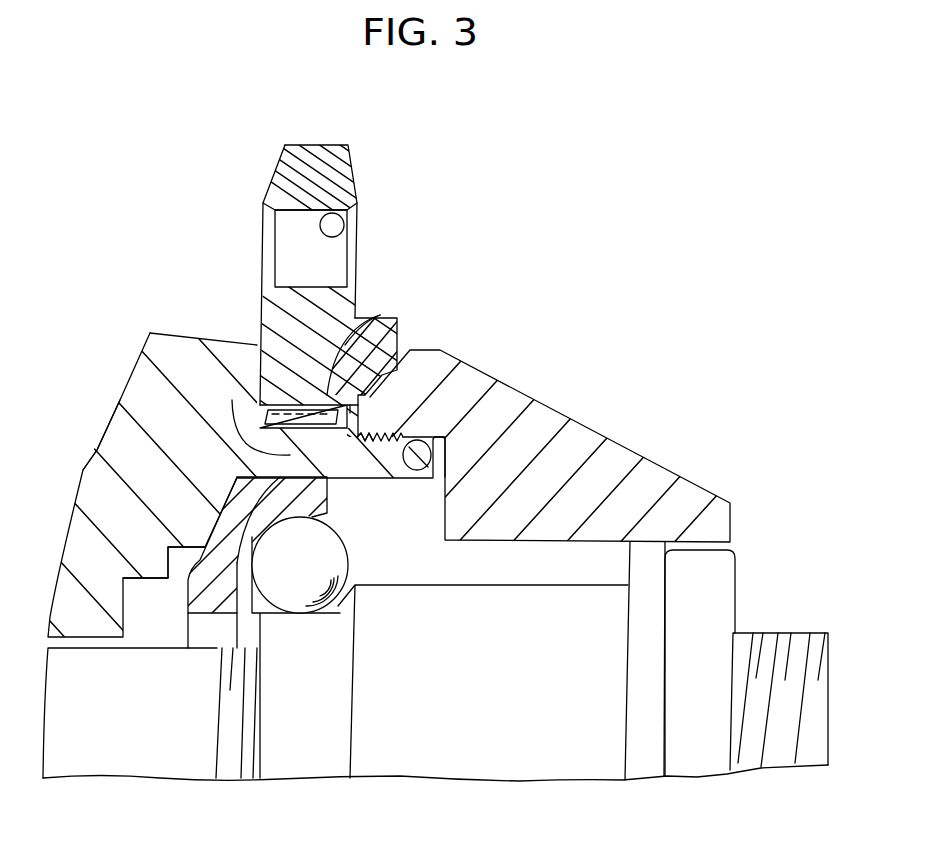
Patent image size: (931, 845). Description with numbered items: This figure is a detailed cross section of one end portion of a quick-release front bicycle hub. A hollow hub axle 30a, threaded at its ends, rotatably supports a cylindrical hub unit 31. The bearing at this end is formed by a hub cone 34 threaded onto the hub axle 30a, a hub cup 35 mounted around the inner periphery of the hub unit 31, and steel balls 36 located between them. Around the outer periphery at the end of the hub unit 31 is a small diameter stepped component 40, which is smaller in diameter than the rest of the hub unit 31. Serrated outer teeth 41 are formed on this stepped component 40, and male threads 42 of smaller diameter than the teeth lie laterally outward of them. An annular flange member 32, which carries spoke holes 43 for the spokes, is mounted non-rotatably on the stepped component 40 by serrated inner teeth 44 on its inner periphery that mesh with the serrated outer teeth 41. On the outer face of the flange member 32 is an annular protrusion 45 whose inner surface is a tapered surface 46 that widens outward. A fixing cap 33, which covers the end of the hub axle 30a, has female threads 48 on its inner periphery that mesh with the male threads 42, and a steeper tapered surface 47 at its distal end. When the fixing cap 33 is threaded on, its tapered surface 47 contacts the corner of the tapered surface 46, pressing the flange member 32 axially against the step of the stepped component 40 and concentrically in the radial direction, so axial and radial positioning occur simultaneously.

The hub axle 30a is at (773, 633).
The hub unit 31 is at (167, 337).
The flange member 32 is at (354, 293).
The fixing cap 33 is at (660, 475).
The hub cone 34 is at (396, 605).
The hub cup 35 is at (108, 418).
The steel balls 36 is at (168, 548).
The small diameter stepped component 40 is at (397, 336).
The serrated outer teeth 41 is at (386, 318).
The male threads 42 is at (452, 457).
The spoke holes 43 is at (346, 228).
The serrated inner teeth 44 is at (232, 400).
The annular protrusion 45 is at (390, 334).
The tapered surface 46 is at (410, 350).
The tapered surface 47 is at (420, 346).
The female threads 48 is at (432, 468).